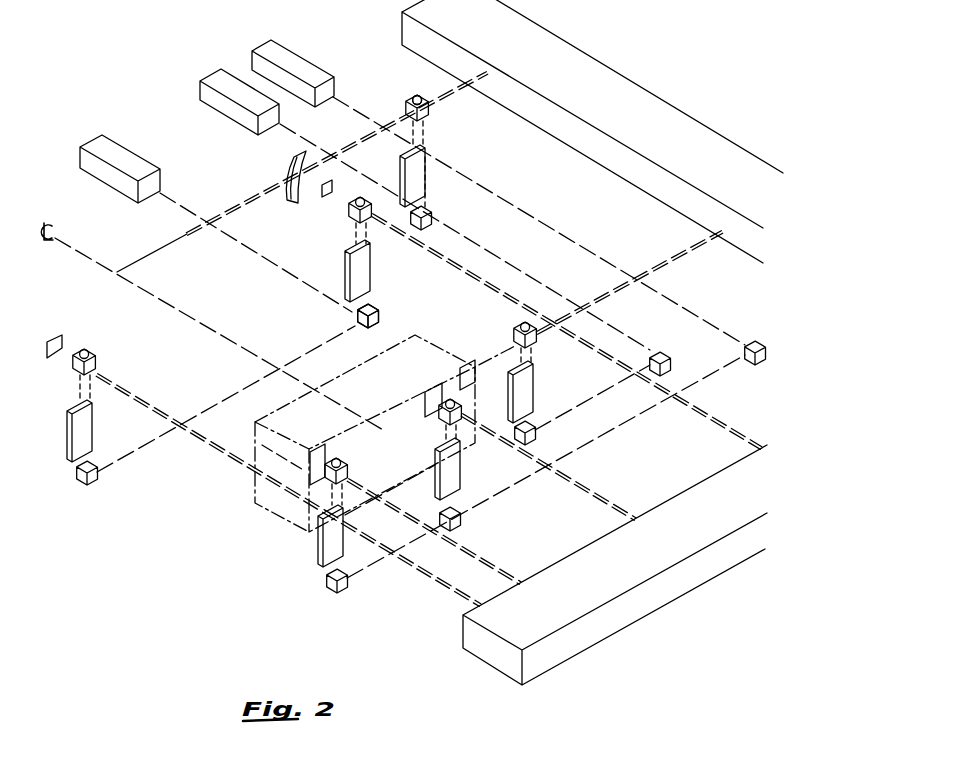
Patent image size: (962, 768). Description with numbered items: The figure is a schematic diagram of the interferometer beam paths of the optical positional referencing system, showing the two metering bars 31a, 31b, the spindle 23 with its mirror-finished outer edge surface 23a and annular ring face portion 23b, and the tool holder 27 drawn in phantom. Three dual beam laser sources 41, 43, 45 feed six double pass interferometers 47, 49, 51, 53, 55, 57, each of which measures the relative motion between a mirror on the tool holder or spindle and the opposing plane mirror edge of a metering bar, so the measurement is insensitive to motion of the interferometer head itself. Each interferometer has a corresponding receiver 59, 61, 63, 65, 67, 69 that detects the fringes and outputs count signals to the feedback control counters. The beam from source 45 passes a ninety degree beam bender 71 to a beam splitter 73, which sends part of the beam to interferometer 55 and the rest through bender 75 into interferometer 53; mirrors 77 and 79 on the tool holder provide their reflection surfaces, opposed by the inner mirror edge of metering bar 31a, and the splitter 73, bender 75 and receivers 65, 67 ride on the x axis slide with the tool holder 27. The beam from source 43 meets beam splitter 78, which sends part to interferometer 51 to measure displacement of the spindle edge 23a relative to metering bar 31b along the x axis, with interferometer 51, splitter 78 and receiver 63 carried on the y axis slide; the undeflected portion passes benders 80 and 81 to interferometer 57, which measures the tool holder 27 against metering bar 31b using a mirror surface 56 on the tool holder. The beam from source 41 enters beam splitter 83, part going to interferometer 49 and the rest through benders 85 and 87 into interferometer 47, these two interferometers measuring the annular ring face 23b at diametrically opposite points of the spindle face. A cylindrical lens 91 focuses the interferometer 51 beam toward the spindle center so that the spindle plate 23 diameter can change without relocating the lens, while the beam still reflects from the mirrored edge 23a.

The spindle 23 is at (213, 325).
The spindle edge 23a is at (302, 167).
The annular ring face portion 23b is at (62, 336).
The tool holder 27 is at (428, 340).
The metering bar 31a is at (647, 602).
The metering bar 31b is at (568, 58).
The laser source 41 is at (92, 136).
The laser source 43 is at (213, 68).
The laser source 45 is at (268, 40).
The interferometer 47 is at (92, 357).
The interferometer 49 is at (350, 217).
The interferometer 51 is at (428, 110).
The interferometer 53 is at (347, 467).
The interferometer 55 is at (440, 417).
The mirror surface 56 is at (468, 364).
The interferometer 57 is at (537, 347).
The receiver 59 is at (92, 428).
The receiver 61 is at (345, 264).
The receiver 63 is at (400, 163).
The receiver 65 is at (320, 538).
The receiver 67 is at (460, 470).
The receiver 69 is at (533, 386).
The 90° beam bender 71 is at (752, 342).
The beam splitter 73 is at (460, 523).
The 90° beam bender 75 is at (347, 587).
The mirror 77 is at (427, 390).
The beam splitter 78 is at (433, 213).
The mirror 79 is at (315, 450).
The 90° beam bender 80 is at (657, 352).
The 90° beam bender 81 is at (535, 432).
The beam splitter 83 is at (355, 317).
The 90° beam bender 85 is at (385, 314).
The 90° beam bender 87 is at (97, 478).
The cylindrical lens 91 is at (407, 108).